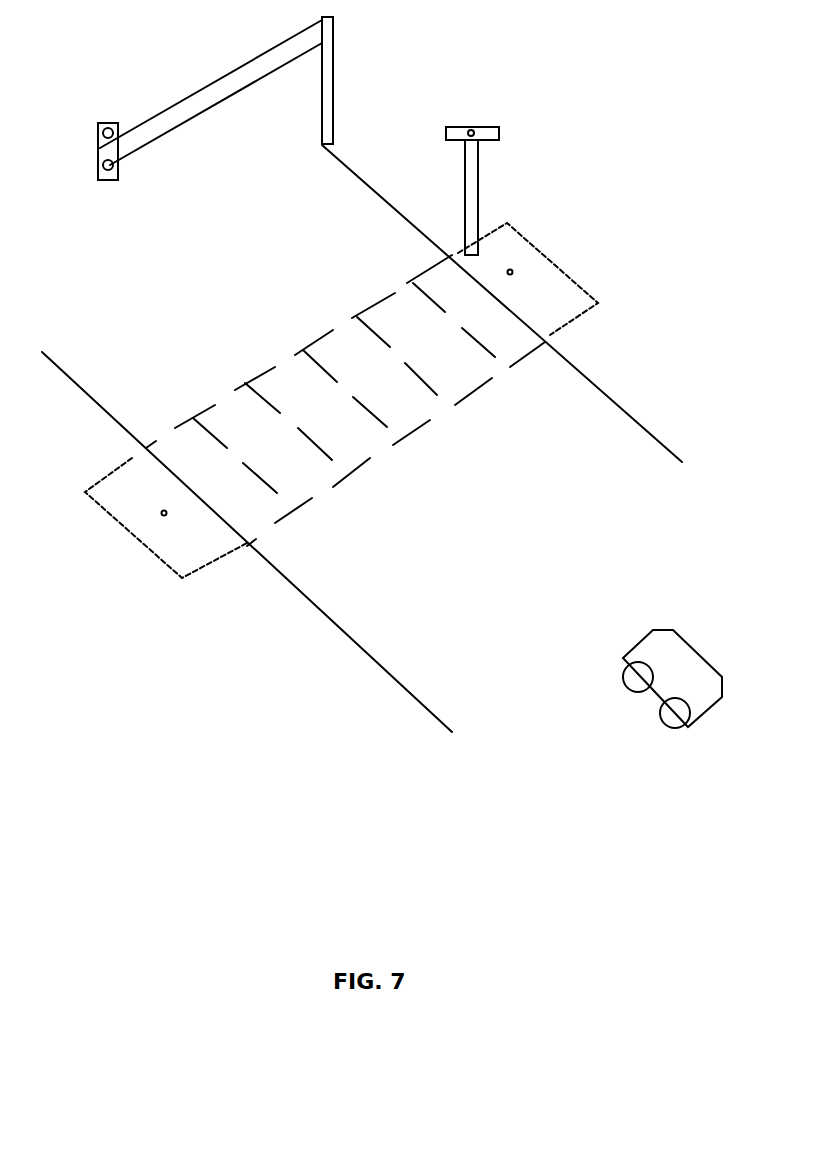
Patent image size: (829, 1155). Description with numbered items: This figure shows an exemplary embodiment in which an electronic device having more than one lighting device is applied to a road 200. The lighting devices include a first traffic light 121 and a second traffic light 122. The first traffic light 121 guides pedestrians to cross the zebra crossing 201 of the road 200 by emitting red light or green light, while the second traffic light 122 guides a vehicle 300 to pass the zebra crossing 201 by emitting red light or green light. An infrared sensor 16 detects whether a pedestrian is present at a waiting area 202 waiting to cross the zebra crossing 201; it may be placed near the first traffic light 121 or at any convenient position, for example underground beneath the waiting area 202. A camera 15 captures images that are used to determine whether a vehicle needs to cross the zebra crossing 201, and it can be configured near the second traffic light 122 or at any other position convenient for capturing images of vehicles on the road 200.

The camera 15 is at (110, 165).
The infrared sensor 16 is at (510, 272).
The first traffic light 121 is at (472, 126).
The second traffic light 122 is at (108, 123).
The road 200 is at (512, 463).
The zebra crossing 201 is at (540, 293).
The waiting area 202 is at (143, 510).
The vehicle 300 is at (658, 640).